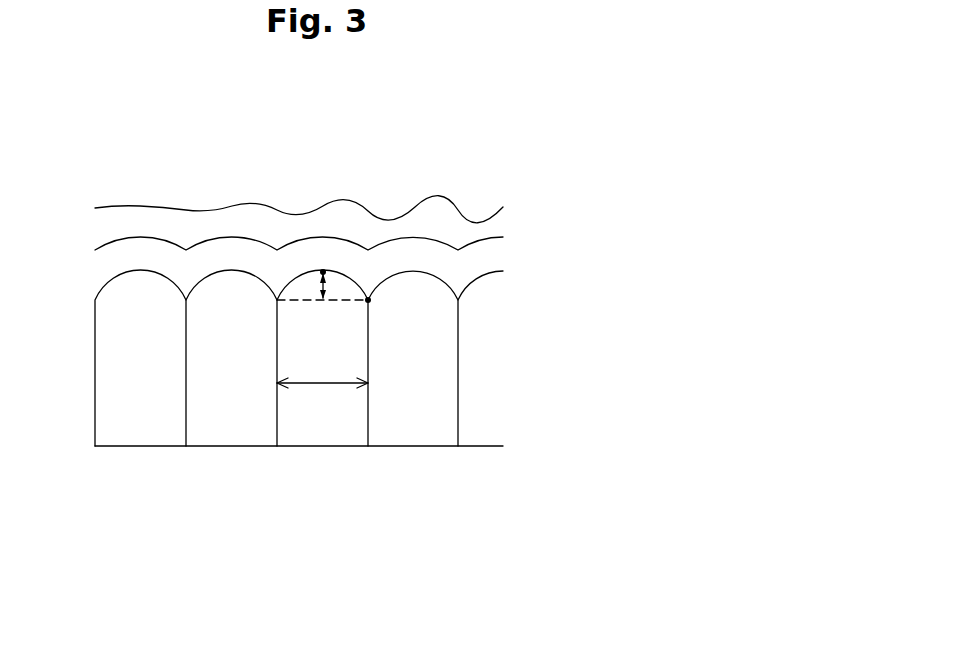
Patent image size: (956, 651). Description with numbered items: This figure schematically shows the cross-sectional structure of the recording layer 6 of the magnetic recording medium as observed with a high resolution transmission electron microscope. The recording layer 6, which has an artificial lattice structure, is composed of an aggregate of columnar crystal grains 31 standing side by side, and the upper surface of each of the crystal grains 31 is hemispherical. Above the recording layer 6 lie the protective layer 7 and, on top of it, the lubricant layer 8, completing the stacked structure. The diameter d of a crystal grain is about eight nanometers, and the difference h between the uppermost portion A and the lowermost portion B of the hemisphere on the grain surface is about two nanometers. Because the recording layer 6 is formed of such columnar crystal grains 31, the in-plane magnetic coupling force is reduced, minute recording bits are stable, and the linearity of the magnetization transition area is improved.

The columnar crystal grains 31 is at (134, 305).
The recording layer 6 is at (423, 342).
The protective layer 7 is at (492, 252).
The lubricant layer 8 is at (492, 223).
The uppermost portion A is at (316, 266).
The lowermost portion B is at (371, 302).
The difference h is at (328, 277).
The diameter d is at (322, 382).